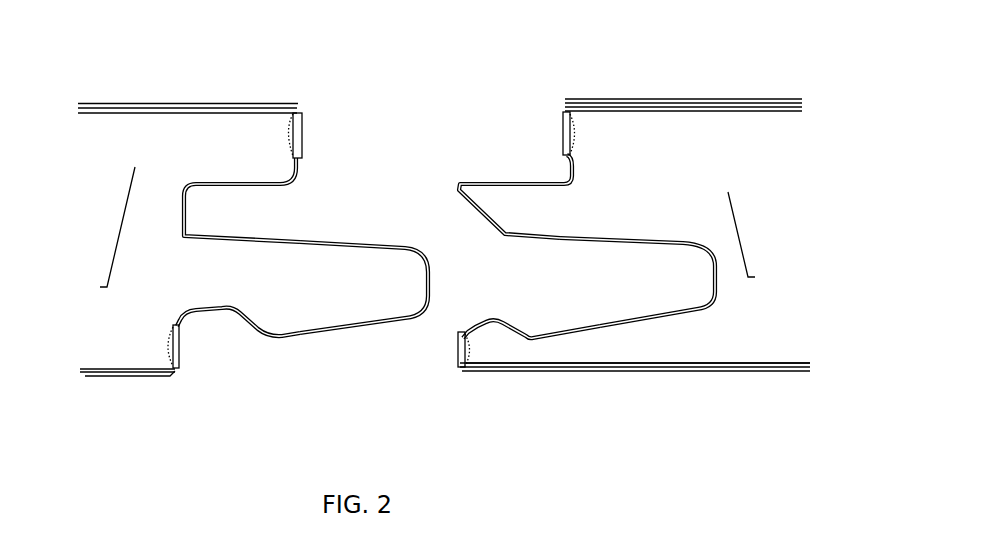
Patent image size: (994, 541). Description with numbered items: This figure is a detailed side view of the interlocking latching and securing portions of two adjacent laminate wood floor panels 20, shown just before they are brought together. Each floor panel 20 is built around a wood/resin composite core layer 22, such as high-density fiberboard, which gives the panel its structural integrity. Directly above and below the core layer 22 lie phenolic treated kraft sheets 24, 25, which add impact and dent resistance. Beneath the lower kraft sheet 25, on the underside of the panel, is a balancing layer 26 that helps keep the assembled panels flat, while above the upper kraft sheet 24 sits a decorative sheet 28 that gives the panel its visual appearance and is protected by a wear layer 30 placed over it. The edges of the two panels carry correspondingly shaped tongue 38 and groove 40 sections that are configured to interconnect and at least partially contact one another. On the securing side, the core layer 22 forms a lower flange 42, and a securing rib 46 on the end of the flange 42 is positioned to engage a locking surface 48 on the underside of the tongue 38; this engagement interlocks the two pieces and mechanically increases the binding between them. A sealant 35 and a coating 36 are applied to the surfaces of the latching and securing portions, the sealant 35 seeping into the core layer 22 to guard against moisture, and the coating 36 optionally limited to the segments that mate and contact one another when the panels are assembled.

The floor panel 20 is at (225, 93).
The core layer 22 is at (428, 235).
The upper kraft sheet 24 is at (298, 111).
The lower kraft sheet 25 is at (108, 372).
The balancing layer 26 is at (138, 375).
The decorative sheet 28 is at (257, 107).
The wear layer 30 is at (140, 103).
The sealant 35 is at (292, 150).
The coating 36 is at (446, 243).
The tongue 38 is at (388, 304).
The groove 40 is at (238, 220).
The lower flange 42 is at (677, 345).
The securing rib 46 is at (487, 343).
The locking surface 48 is at (195, 308).